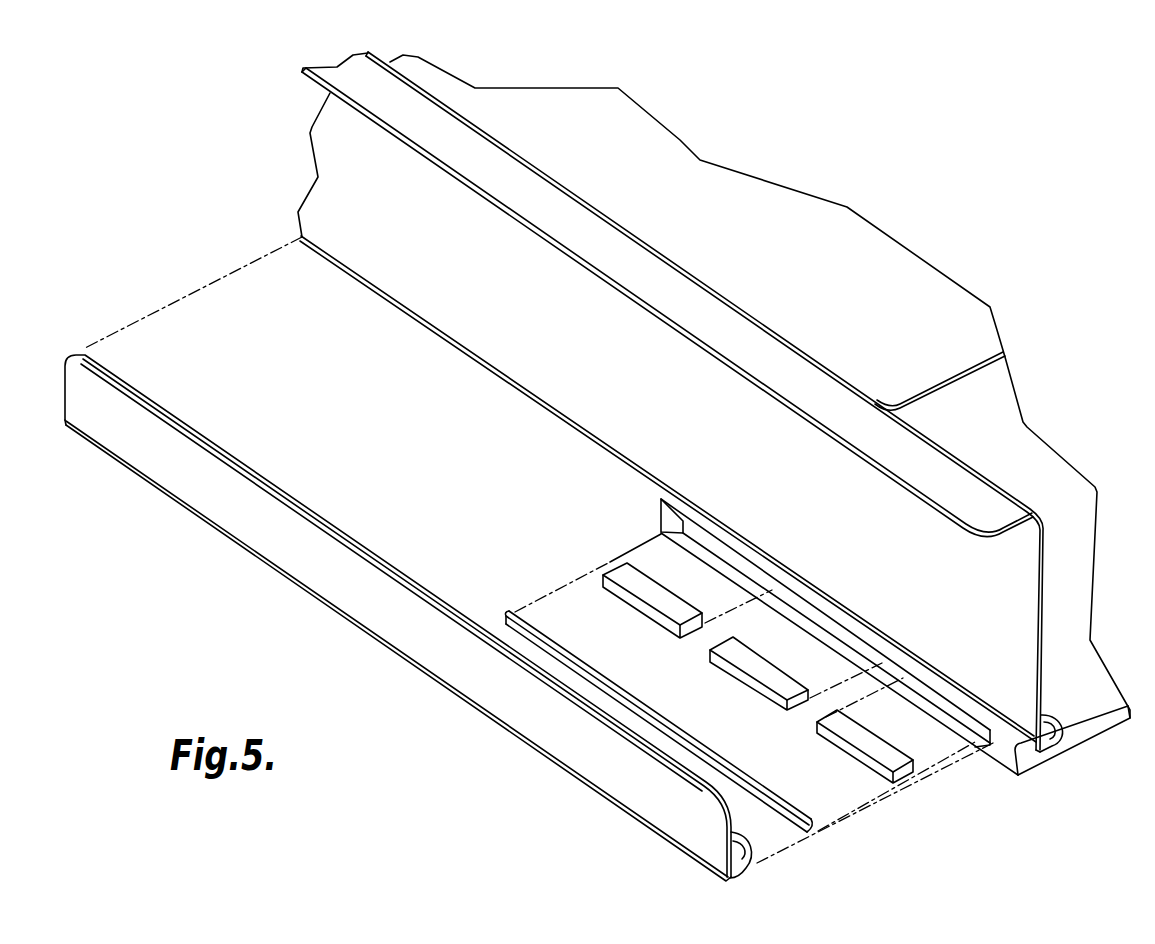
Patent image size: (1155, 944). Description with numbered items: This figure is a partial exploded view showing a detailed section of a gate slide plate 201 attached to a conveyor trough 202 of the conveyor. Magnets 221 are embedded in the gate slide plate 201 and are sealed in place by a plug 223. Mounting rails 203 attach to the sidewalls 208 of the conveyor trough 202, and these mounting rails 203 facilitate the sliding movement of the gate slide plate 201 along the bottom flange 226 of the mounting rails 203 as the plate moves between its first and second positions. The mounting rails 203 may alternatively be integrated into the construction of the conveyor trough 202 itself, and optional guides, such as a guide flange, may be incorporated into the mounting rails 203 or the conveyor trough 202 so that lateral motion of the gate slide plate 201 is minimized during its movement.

The gate slide plate 201 is at (1000, 434).
The conveyor trough 202 is at (771, 253).
The mounting rails 203 is at (380, 598).
The sidewalls 208 is at (1015, 586).
The magnets 221 is at (639, 605).
The plug 223 is at (628, 706).
The bottom flange 226 is at (756, 857).